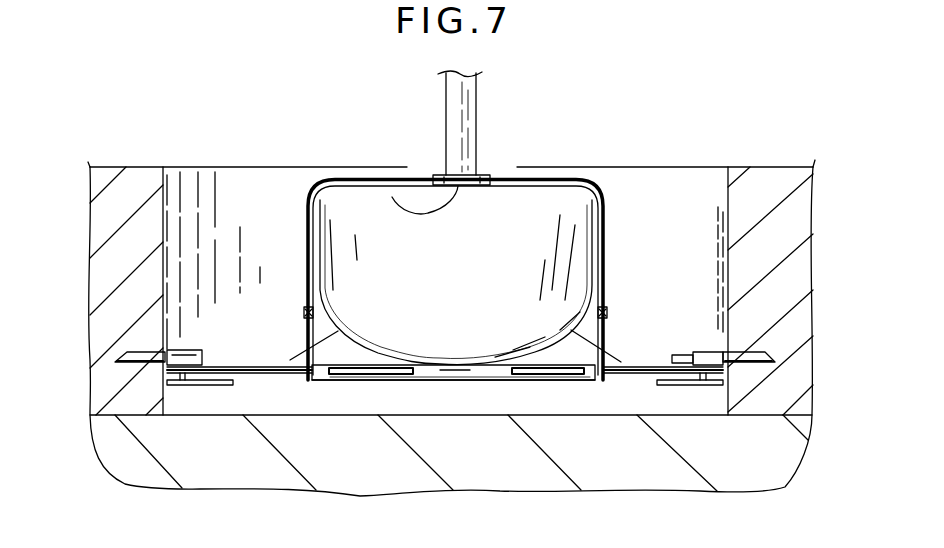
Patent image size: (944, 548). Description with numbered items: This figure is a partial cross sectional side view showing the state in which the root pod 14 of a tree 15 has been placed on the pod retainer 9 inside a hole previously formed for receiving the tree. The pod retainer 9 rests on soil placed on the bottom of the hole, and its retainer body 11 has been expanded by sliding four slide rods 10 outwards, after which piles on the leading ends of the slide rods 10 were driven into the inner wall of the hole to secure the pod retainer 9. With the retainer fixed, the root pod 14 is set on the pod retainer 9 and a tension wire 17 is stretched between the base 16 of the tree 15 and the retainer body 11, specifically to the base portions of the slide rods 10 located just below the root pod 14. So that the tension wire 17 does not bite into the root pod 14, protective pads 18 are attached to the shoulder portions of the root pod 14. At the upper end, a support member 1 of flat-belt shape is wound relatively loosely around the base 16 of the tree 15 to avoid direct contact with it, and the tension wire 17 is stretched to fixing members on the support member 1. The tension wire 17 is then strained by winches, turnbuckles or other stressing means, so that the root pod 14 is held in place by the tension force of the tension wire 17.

The support member 1 is at (392, 197).
The pod retainer 9 is at (423, 383).
The slide rods 10 is at (256, 375).
The retainer body 11 is at (472, 372).
The root pod 14 is at (550, 232).
The tree 15 is at (467, 102).
The base 16 is at (458, 162).
The tension wire 17 is at (307, 253).
The protective pads 18 is at (312, 200).